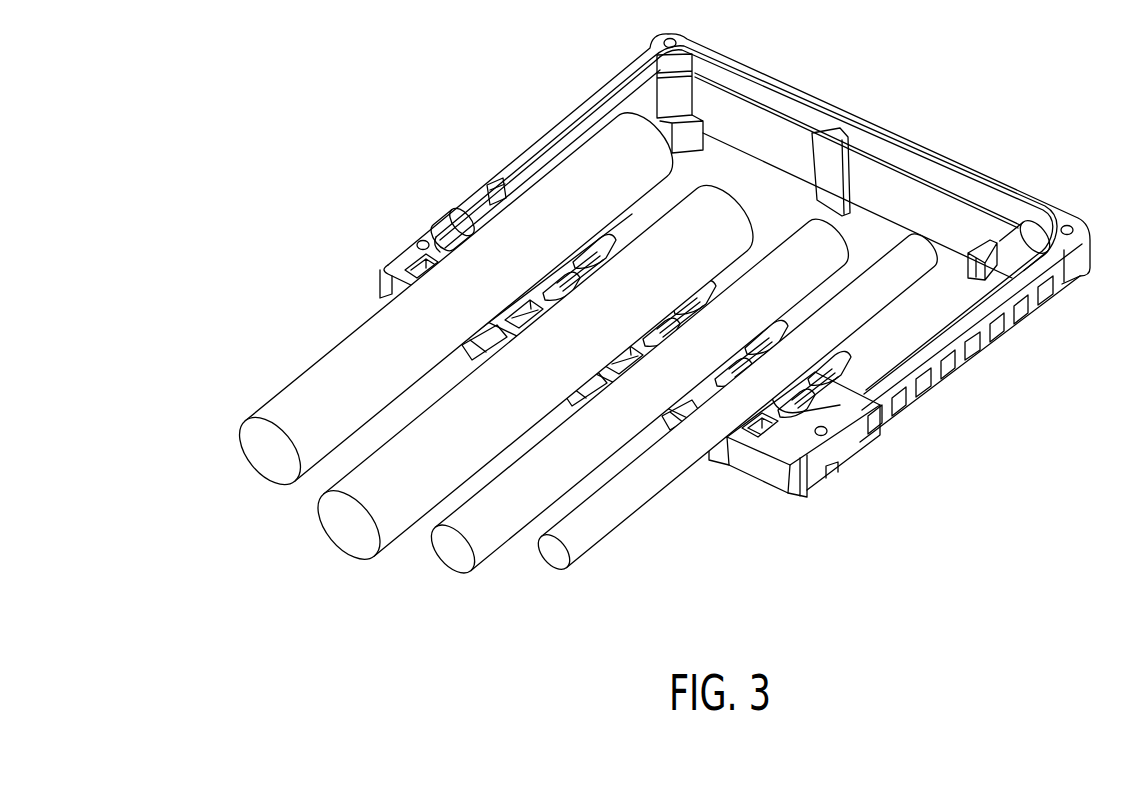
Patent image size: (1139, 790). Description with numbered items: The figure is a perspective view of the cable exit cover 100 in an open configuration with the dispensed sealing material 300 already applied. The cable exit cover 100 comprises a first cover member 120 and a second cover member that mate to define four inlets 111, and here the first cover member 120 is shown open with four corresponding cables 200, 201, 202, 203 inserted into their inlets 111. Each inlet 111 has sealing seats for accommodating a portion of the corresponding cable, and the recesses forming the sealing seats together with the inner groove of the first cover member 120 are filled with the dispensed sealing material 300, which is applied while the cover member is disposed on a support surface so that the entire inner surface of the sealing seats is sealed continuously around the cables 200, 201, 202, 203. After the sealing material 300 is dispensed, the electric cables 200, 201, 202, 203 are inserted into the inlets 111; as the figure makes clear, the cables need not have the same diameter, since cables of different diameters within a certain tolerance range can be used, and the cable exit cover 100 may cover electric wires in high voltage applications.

The cable exit cover 100 is at (904, 107).
The inlet 111 is at (490, 192).
The first cover member 120 is at (934, 397).
The cable 200 is at (263, 460).
The cable 201 is at (343, 527).
The cable 202 is at (450, 555).
The cable 203 is at (553, 557).
The dispensed sealing material 300 is at (1002, 268).